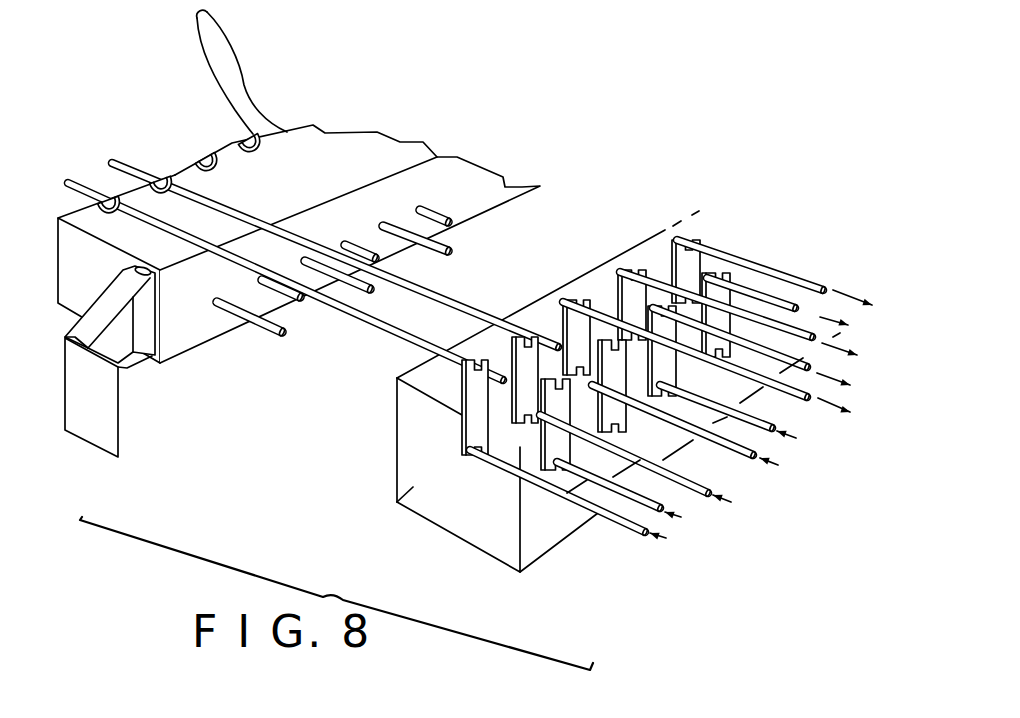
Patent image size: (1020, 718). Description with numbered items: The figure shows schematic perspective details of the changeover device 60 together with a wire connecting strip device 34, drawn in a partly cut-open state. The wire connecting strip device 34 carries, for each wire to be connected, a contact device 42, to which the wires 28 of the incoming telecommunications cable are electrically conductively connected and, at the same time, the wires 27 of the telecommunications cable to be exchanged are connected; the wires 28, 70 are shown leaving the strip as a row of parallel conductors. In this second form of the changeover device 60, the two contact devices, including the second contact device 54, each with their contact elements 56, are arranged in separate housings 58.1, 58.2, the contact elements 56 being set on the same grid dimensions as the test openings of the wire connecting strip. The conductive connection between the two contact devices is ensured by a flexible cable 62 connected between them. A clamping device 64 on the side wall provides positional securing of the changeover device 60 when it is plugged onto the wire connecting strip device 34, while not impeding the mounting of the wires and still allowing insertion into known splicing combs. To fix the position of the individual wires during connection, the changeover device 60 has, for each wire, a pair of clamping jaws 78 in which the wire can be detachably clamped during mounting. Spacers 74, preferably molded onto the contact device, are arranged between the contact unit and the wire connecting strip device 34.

The wires 27 is at (666, 538).
The wires 28 is at (729, 300).
The terminal pins 70 is at (793, 387).
The wire connecting strip device 34 is at (420, 533).
The contact device 42 is at (640, 378).
The second contact device 54 is at (250, 334).
The contact elements 56 is at (362, 247).
The housing 58.1 is at (487, 197).
The housing 58.2 is at (397, 500).
The changeover device 60 is at (390, 130).
The flexible cable 62 is at (237, 50).
The clamping device 64 is at (93, 427).
The spacers 74 is at (432, 342).
The pair of clamping jaws 78 is at (167, 178).